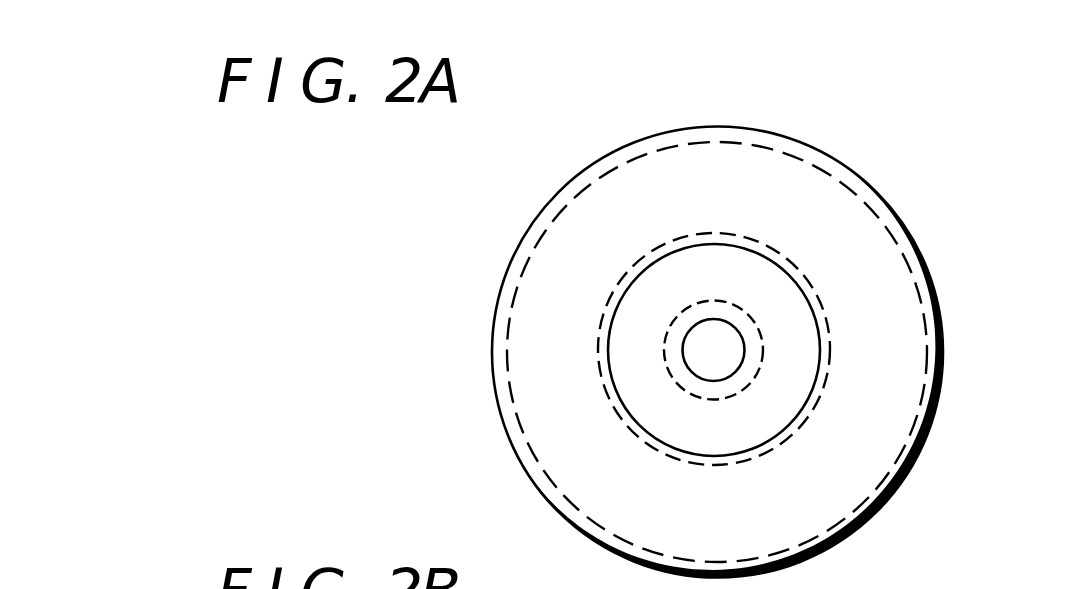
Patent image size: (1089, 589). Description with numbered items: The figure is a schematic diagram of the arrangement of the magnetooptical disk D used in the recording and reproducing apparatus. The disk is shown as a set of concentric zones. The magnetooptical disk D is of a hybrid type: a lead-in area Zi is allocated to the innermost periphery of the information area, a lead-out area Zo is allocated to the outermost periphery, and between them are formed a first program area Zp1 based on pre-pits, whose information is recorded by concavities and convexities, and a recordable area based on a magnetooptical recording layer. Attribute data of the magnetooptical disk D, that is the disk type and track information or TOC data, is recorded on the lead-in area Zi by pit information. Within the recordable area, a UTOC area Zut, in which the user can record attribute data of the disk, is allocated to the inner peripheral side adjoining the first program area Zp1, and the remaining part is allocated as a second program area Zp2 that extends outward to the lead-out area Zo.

The magnetooptical disk D is at (853, 172).
The lead-out area Zo is at (537, 223).
The second program area Zp2 is at (552, 323).
The UTOC area Zut is at (605, 388).
The first program area Zp1 is at (782, 308).
The lead-in area Zi is at (752, 371).